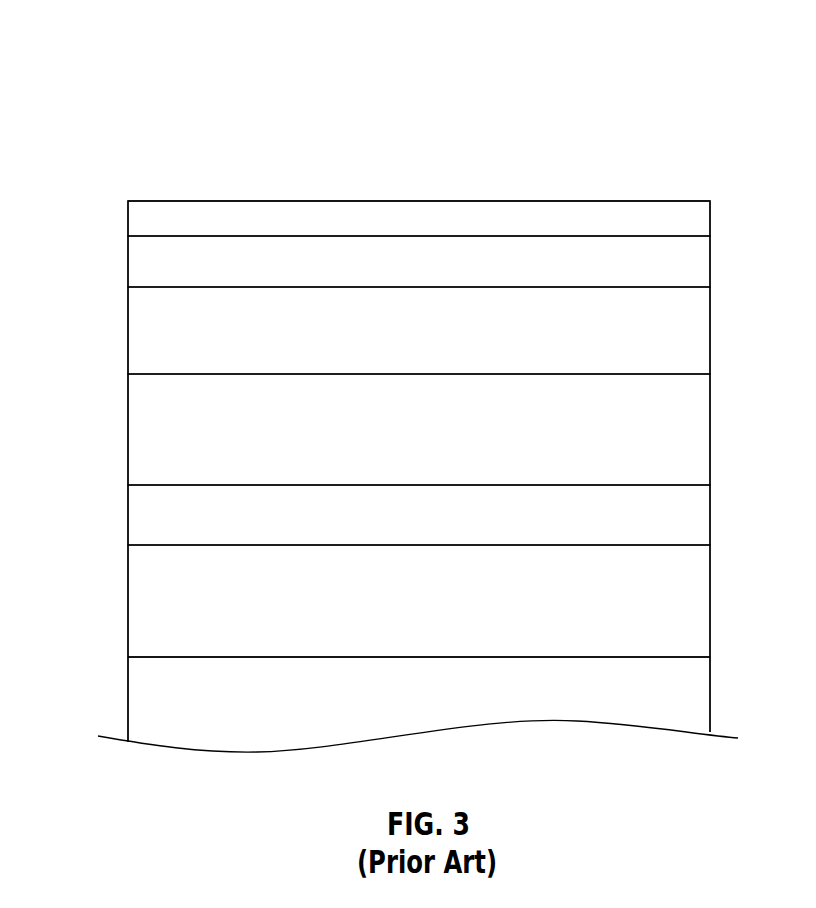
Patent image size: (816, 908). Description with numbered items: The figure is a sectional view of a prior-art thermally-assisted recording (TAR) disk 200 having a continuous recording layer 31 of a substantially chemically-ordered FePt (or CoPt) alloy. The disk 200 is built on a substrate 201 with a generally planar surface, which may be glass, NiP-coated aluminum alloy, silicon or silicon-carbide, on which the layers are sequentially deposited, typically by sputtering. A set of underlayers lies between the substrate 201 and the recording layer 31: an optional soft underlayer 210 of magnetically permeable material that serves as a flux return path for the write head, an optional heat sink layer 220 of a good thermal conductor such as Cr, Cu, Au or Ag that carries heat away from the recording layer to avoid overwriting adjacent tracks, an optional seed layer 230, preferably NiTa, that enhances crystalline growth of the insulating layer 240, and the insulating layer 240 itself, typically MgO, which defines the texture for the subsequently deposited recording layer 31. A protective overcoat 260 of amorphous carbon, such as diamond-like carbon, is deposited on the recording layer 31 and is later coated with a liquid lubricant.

The TAR disk 200 is at (147, 57).
The protective overcoat 260 is at (128, 220).
The continuous recording layer 31 is at (128, 263).
The insulating layer 240 is at (128, 329).
The seed layer 230 is at (128, 428).
The heat sink layer 220 is at (128, 517).
The soft underlayer 210 is at (128, 603).
The substrate 201 is at (128, 712).